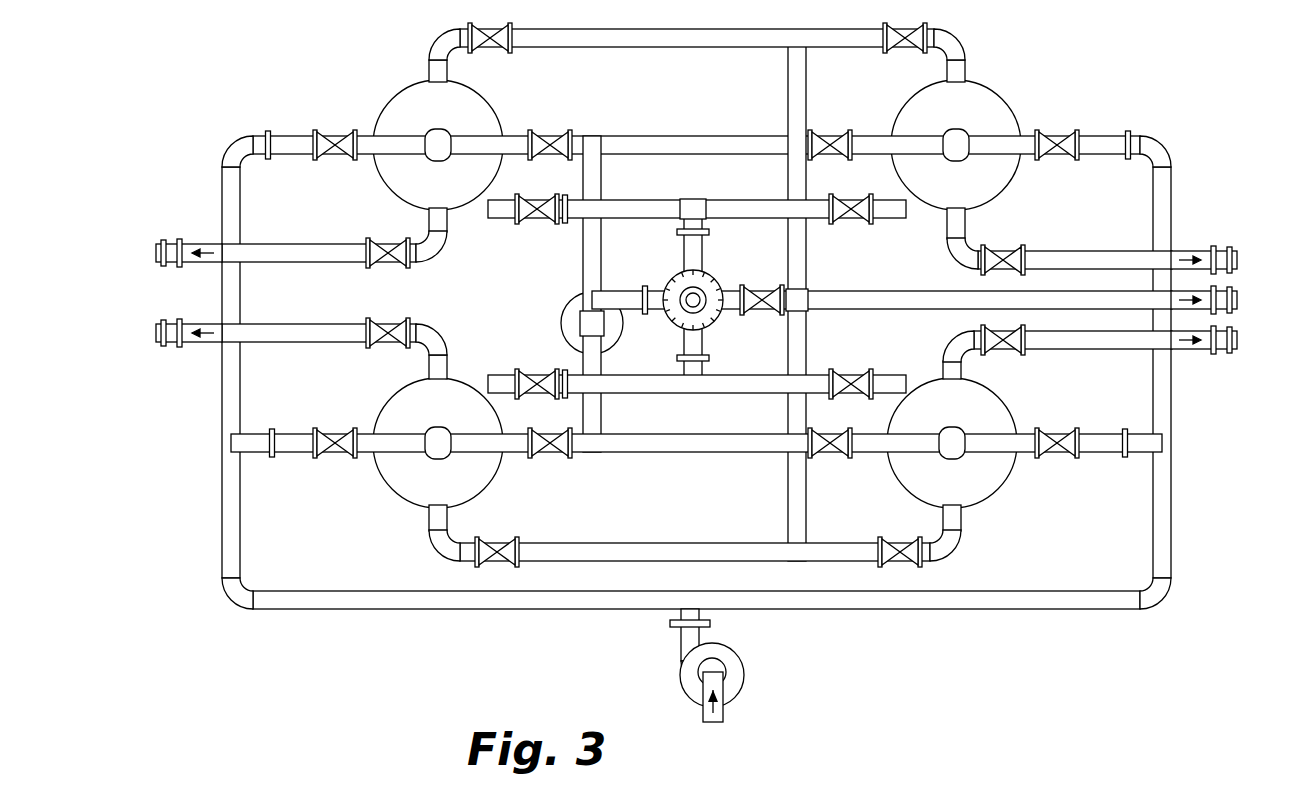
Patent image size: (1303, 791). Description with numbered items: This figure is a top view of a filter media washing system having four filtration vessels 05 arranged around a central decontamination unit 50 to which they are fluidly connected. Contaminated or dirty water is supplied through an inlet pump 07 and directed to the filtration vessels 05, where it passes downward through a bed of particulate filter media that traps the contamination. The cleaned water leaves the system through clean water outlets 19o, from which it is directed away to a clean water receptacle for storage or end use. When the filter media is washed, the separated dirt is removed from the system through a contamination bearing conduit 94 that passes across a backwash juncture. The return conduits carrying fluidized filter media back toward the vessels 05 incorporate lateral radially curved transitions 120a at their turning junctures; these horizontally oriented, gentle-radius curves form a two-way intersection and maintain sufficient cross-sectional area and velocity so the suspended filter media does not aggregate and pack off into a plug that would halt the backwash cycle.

The filtration vessel 05 is at (390, 96).
The clean water outlet 19o is at (158, 246).
The contamination bearing conduit 94 is at (1243, 299).
The lateral radially curved transition 120a is at (700, 198).
The decontamination unit 50 is at (722, 272).
The inlet pump 07 is at (742, 700).